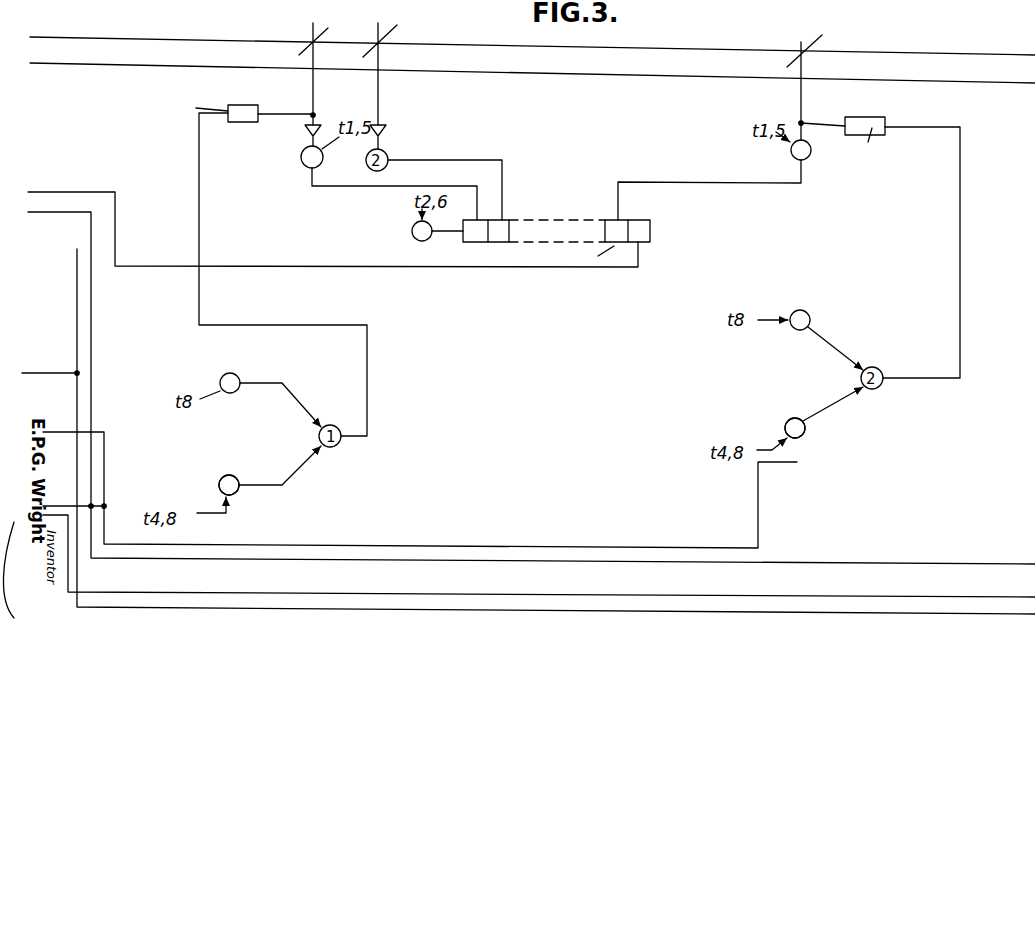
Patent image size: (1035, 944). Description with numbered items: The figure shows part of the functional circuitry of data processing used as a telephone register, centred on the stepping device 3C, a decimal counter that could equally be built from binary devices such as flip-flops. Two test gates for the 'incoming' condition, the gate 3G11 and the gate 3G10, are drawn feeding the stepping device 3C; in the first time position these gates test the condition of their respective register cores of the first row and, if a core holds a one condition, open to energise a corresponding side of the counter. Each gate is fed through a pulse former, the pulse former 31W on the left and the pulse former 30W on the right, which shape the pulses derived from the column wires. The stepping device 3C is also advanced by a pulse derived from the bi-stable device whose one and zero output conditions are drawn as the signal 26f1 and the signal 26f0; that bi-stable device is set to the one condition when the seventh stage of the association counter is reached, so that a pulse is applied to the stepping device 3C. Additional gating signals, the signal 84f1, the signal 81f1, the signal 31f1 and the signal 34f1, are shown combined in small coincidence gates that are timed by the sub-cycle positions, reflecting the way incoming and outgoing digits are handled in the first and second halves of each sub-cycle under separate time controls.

The pulse former 31W is at (235, 258).
The test gate 3G11 is at (363, 183).
The stepping device 3C is at (556, 228).
The pulse former 30W is at (880, 237).
The test gate 3G10 is at (825, 157).
The signal input to gate 26f1 is at (77, 249).
The signal input to gate 84f1 is at (800, 309).
The signal input to gate 81f1 is at (218, 383).
The signal input to gate 31f1 is at (217, 485).
The signal input to gate 34f1 is at (784, 428).
The signal input to gate 26f0 is at (218, 492).